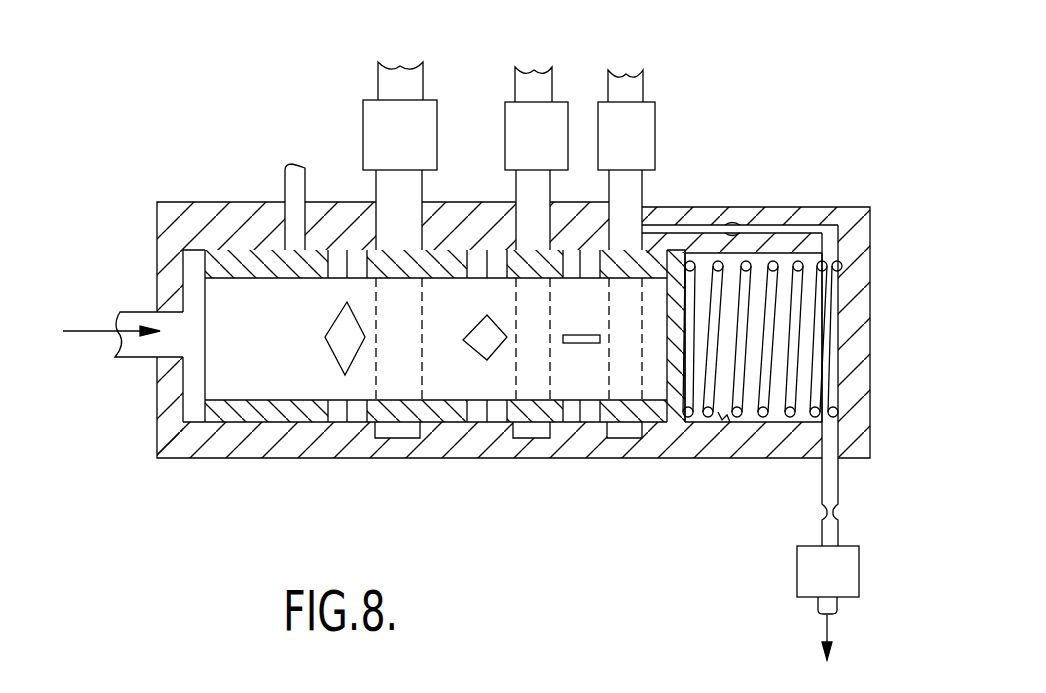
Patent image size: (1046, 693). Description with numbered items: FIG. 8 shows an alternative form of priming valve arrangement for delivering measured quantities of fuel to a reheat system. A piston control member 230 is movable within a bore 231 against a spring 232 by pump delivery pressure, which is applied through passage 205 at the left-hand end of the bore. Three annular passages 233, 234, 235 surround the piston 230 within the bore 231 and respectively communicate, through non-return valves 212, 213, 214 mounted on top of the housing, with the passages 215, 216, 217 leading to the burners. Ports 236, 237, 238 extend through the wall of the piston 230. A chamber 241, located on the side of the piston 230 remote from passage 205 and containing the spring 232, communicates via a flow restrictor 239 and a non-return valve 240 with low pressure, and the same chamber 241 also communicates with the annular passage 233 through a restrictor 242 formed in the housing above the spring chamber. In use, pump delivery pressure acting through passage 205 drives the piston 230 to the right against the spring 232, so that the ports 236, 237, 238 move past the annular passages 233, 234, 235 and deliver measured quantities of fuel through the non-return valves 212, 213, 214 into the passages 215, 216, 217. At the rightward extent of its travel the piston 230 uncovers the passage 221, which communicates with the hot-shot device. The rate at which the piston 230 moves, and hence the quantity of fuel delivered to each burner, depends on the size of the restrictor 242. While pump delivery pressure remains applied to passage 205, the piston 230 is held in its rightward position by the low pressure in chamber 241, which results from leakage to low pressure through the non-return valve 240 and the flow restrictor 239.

The passage 205 is at (130, 345).
The non-return valve 212 is at (635, 150).
The non-return valve 213 is at (515, 128).
The non-return valve 214 is at (375, 138).
The passage 215 is at (630, 92).
The passage 216 is at (532, 78).
The passage 217 is at (397, 85).
The passage 221 is at (290, 180).
The piston control member 230 is at (248, 380).
The bore 231 is at (727, 423).
The spring 232 is at (800, 268).
The annular passage 233 is at (628, 242).
The annular passage 234 is at (530, 233).
The annular passage 235 is at (398, 240).
The port 236 is at (582, 337).
The port 237 is at (477, 337).
The port 238 is at (338, 328).
The flow restrictor 239 is at (838, 510).
The non-return valve 240 is at (838, 582).
The chamber 241 is at (803, 357).
The restrictor 242 is at (730, 224).